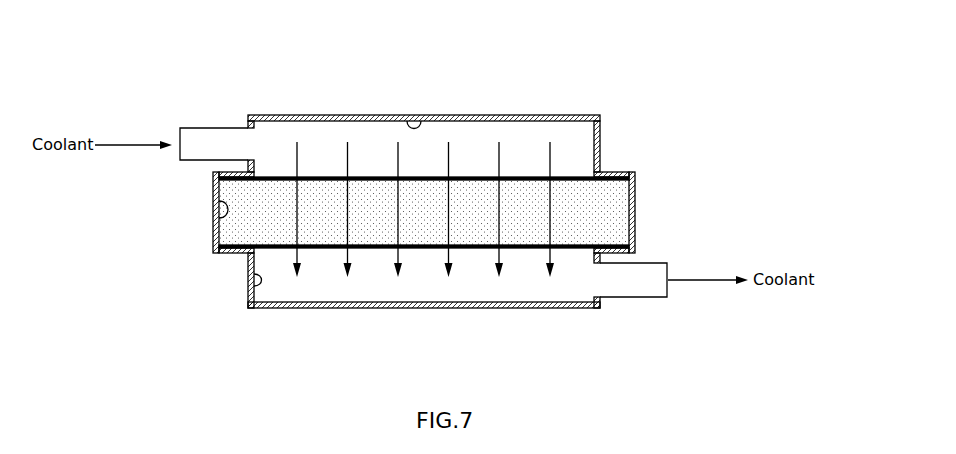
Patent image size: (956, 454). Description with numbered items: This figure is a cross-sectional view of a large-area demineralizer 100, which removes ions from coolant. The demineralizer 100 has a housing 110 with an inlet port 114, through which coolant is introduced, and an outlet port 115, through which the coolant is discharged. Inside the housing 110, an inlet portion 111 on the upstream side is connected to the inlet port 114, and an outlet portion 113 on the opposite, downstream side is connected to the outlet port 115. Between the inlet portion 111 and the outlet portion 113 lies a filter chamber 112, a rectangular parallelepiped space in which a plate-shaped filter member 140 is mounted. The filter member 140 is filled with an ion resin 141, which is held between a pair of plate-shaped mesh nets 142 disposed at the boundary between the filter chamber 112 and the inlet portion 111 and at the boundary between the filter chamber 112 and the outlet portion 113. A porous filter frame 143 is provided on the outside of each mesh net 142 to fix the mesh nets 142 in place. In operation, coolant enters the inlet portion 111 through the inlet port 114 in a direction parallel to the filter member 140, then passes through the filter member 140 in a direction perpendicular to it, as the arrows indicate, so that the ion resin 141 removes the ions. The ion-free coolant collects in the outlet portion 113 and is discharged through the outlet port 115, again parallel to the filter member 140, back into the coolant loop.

The large-area demineralizer 100 is at (433, 201).
The housing 110 is at (515, 108).
The inlet portion 111 is at (407, 120).
The filter chamber 112 is at (215, 212).
The outlet portion 113 is at (248, 289).
The inlet port 114 is at (216, 138).
The outlet port 115 is at (641, 290).
The plate-shaped filter member 140 is at (426, 265).
The ion resin 141 is at (615, 210).
The mesh net 142 is at (420, 248).
The porous filter frame 143 is at (365, 247).